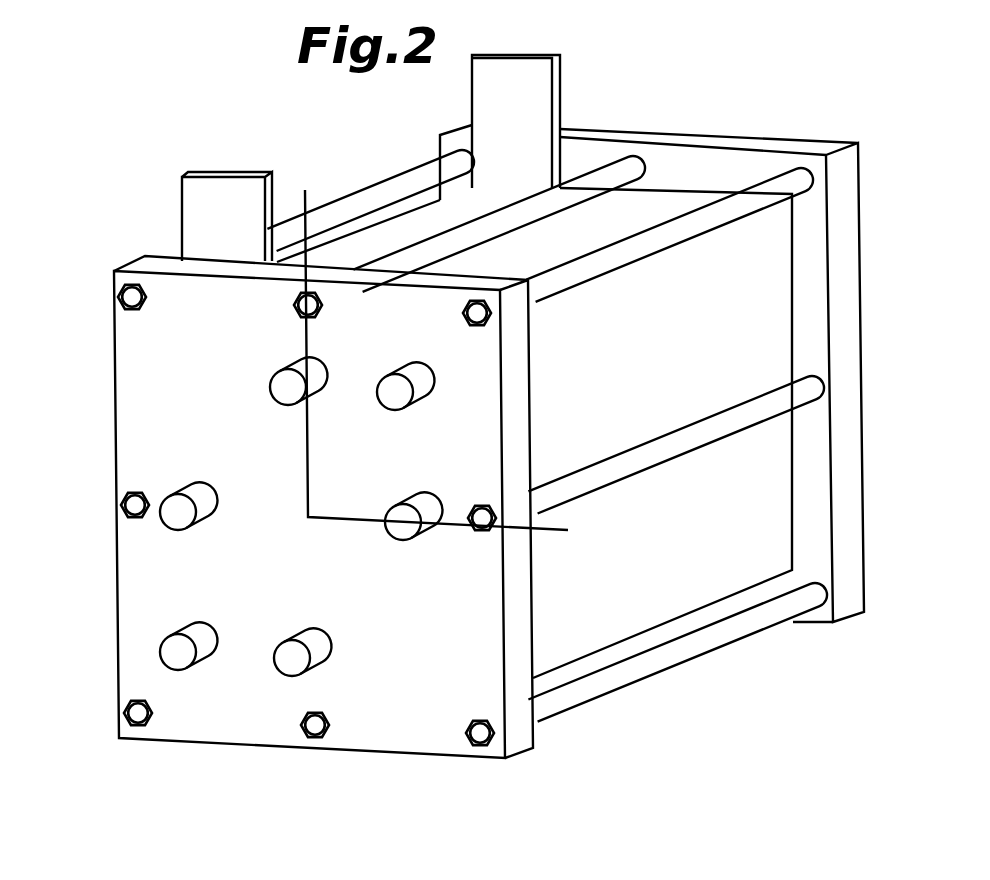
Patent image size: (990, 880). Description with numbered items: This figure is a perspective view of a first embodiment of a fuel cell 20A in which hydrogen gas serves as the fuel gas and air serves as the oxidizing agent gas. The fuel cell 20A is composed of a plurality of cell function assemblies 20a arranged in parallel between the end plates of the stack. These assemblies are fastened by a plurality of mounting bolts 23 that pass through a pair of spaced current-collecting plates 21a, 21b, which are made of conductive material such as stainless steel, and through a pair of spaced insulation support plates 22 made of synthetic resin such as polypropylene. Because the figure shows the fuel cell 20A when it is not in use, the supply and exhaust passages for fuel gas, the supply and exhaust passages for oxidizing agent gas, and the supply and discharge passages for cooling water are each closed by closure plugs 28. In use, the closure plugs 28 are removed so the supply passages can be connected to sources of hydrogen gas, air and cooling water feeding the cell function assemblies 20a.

The fuel cell 20A is at (828, 120).
The cell function assemblies 20a is at (775, 509).
The current-collecting plate 21a is at (228, 197).
The current-collecting plate 21b is at (545, 101).
The insulation support plates 22 is at (125, 428).
The mounting bolts 23 is at (386, 188).
The closure plugs 28 is at (323, 388).